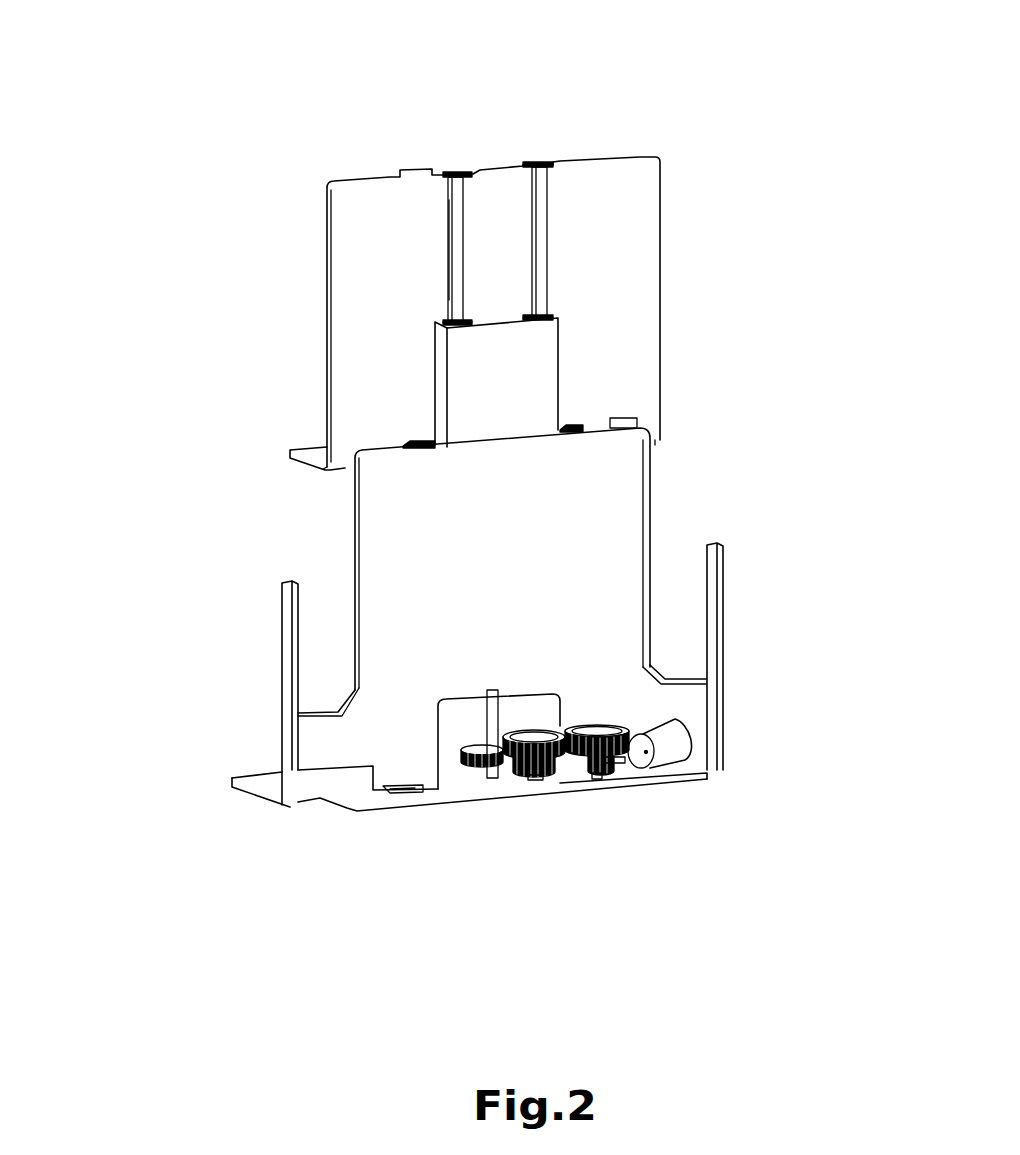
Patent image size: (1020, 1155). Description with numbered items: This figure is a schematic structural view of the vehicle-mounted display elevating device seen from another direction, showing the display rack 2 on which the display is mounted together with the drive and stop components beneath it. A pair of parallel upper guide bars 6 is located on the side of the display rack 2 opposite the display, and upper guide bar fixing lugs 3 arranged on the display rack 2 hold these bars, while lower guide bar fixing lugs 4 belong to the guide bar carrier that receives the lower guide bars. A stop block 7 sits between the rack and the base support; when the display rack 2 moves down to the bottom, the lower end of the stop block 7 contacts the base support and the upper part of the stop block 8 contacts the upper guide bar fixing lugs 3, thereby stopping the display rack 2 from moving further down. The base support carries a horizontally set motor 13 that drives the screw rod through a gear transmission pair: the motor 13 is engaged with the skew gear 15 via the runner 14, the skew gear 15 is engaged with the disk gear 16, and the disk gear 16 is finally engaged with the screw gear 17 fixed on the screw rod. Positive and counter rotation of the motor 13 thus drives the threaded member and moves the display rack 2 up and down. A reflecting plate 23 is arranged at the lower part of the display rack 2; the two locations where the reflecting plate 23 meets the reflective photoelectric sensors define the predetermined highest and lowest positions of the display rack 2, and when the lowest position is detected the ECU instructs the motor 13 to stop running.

The display rack 2 is at (635, 182).
The upper guide bar fixing lug 3 is at (543, 163).
The lower guide bar fixing lug 4 is at (413, 442).
The upper guide bar 6 is at (453, 303).
The stop block 7 is at (520, 382).
The upper part of the stop block 8 is at (547, 320).
The motor 13 is at (657, 747).
The runner 14 is at (617, 762).
The skew gear 15 is at (608, 760).
The disk gear 16 is at (537, 777).
The screw gear 17 is at (473, 762).
The reflecting plate 23 is at (640, 427).